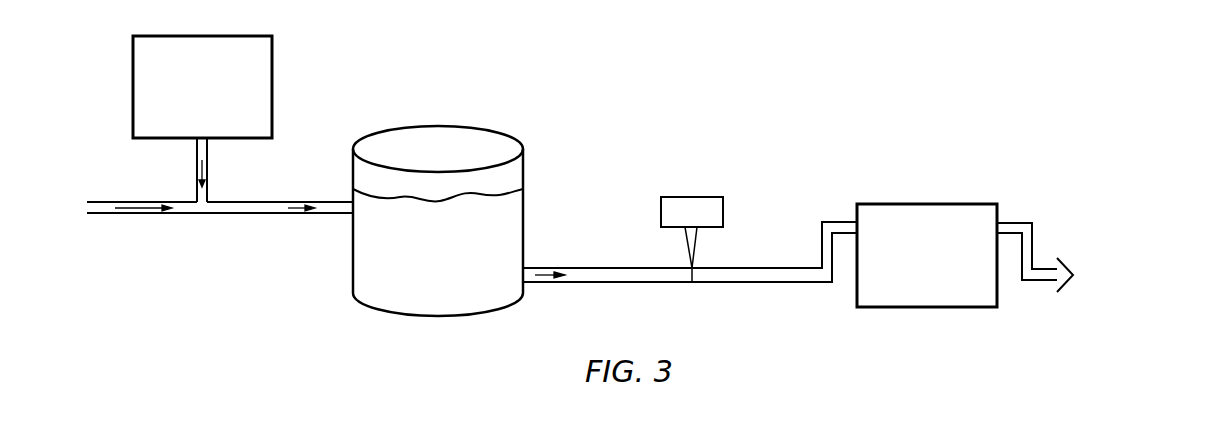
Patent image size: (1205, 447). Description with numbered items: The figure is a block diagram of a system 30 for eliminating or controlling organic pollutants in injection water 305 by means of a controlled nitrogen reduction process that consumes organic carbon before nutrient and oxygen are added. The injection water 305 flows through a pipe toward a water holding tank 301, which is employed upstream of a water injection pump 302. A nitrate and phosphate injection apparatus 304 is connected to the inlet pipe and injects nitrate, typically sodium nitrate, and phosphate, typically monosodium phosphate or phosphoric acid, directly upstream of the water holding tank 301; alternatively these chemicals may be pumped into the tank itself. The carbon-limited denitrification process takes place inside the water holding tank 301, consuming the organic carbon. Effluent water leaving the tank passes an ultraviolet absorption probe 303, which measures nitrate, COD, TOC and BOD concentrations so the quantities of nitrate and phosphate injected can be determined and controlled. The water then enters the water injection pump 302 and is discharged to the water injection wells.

The system 30 is at (809, 54).
The water holding tank 301 is at (482, 126).
The water injection pump 302 is at (972, 307).
The ultraviolet absorption probe 303 is at (698, 197).
The nitrate and phosphate injection apparatus 304 is at (252, 138).
The injection water 305 is at (138, 213).